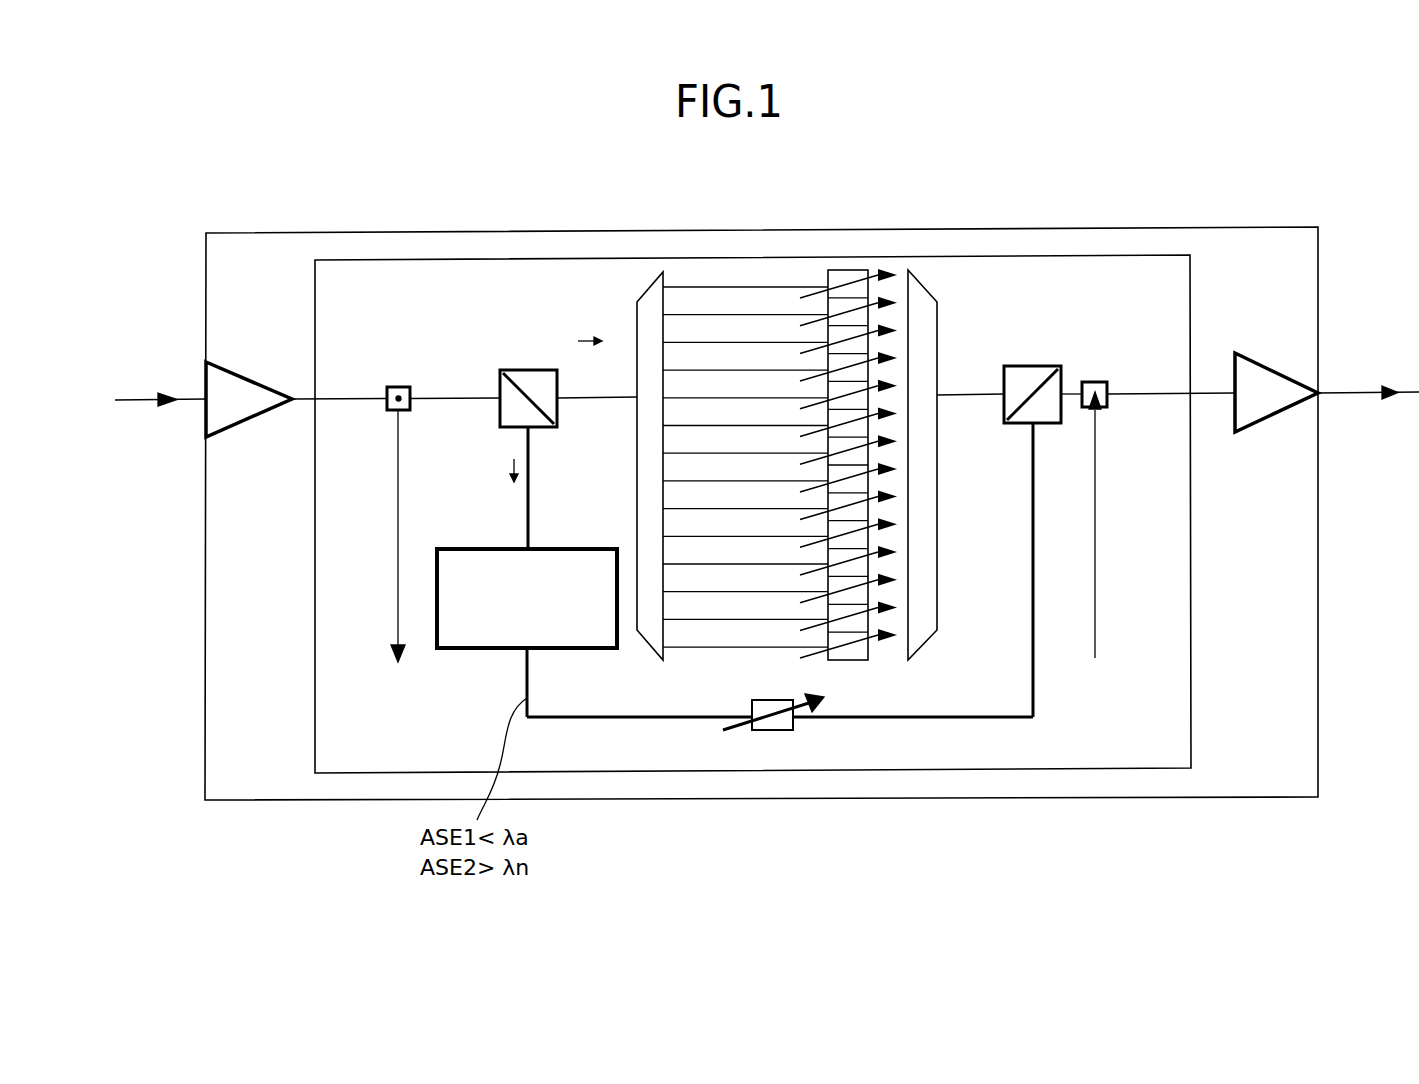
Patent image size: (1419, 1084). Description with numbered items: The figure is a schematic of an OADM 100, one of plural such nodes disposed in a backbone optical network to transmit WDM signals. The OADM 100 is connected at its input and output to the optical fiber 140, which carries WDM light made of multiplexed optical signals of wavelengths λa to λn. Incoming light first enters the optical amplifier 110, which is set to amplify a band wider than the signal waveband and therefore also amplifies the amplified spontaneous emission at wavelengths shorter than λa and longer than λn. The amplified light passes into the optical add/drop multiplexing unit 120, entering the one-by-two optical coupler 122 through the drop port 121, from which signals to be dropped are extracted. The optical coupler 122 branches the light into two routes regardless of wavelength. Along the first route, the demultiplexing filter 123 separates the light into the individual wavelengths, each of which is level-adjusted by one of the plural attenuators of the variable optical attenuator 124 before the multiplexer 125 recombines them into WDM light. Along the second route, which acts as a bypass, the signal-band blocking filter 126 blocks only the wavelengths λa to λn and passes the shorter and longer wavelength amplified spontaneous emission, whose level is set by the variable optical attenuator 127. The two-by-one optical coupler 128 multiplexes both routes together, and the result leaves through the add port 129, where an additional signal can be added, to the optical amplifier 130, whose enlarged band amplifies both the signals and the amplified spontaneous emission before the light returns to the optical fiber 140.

The OADM 100 is at (1162, 227).
The optical amplifier 110 is at (245, 374).
The optical add/drop multiplexing unit 120 is at (1068, 253).
The drop port 121 is at (398, 386).
The optical coupler 122 is at (510, 369).
The demultiplexing filter 123 is at (640, 290).
The variable optical attenuator 124 is at (830, 256).
The multiplexer 125 is at (930, 280).
The signal-band blocking filter 126 is at (562, 548).
The variable optical attenuator 127 is at (797, 731).
The optical coupler 128 is at (1033, 365).
The add port 129 is at (1093, 381).
The optical amplifier 130 is at (1253, 360).
The optical fiber 140 is at (135, 398).